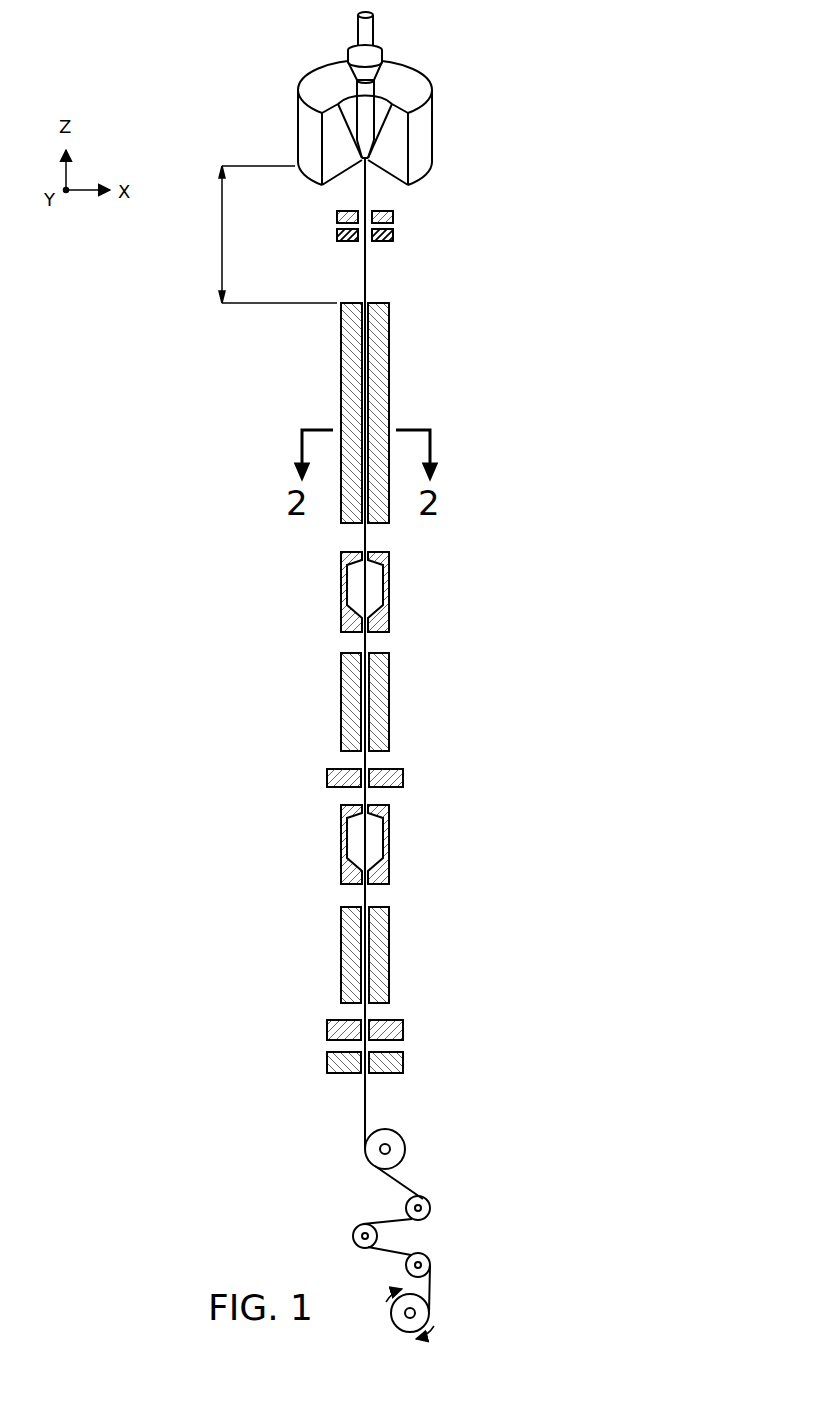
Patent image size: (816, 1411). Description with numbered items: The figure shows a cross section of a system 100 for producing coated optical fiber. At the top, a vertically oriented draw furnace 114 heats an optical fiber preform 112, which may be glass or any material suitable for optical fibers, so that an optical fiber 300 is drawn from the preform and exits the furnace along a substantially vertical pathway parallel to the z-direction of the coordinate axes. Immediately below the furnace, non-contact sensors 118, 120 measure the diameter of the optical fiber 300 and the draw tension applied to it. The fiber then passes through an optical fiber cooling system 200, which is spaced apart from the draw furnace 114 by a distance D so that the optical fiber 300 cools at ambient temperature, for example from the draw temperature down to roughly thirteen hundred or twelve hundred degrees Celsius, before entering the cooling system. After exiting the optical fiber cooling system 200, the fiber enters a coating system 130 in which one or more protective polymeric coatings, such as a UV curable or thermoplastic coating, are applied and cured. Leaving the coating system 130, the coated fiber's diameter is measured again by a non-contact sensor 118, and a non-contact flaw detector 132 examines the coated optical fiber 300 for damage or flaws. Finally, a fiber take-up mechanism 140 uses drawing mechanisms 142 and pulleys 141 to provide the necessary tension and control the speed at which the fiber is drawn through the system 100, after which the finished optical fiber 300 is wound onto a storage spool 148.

The system 100 is at (616, 173).
The optical fiber preform 112 is at (404, 41).
The draw furnace 114 is at (452, 142).
The non-contact sensor 118 is at (394, 218).
The non-contact sensor 120 is at (394, 235).
The coating system 130 is at (315, 553).
The non-contact flaw detector 132 is at (403, 1066).
The fiber take-up mechanism 140 is at (408, 1230).
The pulleys 141 is at (406, 1208).
The drawing mechanisms 142 is at (365, 1157).
The storage spool 148 is at (390, 1316).
The optical fiber cooling system 200 is at (433, 386).
The optical fiber 300 is at (348, 184).